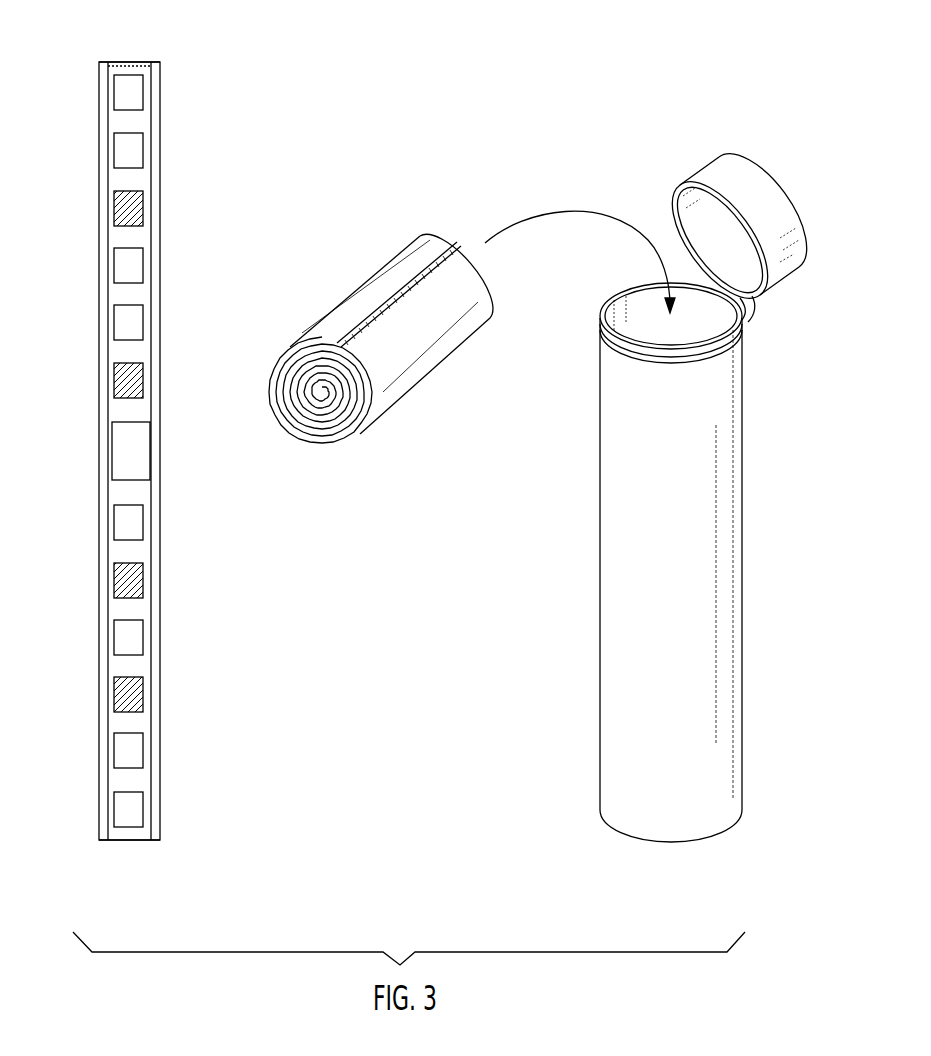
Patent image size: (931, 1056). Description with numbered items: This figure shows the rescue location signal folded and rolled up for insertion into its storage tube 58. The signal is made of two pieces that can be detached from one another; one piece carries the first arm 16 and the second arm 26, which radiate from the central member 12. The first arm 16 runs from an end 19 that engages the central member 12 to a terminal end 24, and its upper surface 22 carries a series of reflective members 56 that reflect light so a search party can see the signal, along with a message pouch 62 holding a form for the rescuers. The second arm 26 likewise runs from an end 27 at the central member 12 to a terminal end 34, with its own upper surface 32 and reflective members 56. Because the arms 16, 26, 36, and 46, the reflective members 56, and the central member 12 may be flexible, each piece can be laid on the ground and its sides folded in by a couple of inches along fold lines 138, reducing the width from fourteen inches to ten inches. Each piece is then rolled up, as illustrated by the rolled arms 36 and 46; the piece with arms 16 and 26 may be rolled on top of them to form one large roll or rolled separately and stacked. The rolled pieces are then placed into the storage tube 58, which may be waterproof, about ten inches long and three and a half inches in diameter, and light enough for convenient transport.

The central member 12 is at (134, 451).
The first arm 16 is at (140, 609).
The end 19 is at (125, 490).
The upper surface 22 is at (123, 667).
The terminal end 24 is at (145, 842).
The second arm 26 is at (140, 238).
The end 27 is at (140, 410).
The upper surface 32 is at (123, 297).
The terminal end 34 is at (132, 62).
The arm 36 is at (372, 297).
The arm 46 is at (326, 395).
The reflective members 56 is at (137, 752).
The storage tube 58 is at (597, 494).
The message pouch 62 is at (122, 457).
The fold lines 138 is at (157, 802).